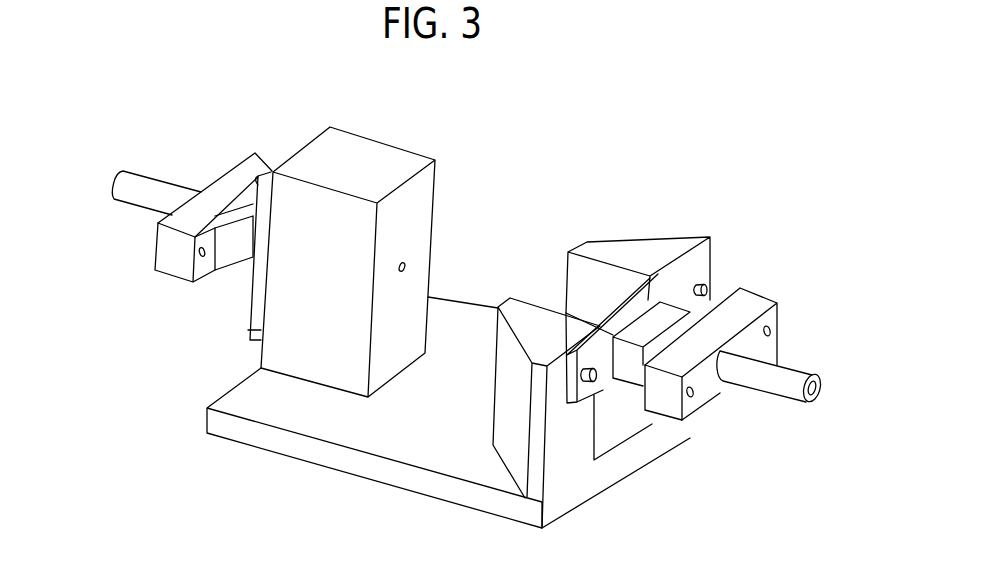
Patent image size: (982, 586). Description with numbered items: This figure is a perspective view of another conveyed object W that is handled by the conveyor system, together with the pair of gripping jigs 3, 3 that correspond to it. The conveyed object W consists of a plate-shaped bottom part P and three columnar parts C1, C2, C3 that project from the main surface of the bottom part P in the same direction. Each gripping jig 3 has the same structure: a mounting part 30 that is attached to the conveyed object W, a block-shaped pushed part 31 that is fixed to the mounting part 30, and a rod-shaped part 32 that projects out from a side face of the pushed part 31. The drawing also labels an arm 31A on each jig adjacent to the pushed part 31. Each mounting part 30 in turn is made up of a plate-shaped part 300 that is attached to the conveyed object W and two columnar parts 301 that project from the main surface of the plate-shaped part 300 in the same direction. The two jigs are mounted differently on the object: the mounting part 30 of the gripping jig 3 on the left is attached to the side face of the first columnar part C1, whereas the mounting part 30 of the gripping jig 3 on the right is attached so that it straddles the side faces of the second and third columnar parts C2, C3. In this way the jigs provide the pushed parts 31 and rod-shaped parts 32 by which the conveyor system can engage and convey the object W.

The gripping jig 3 is at (463, 313).
The mounting part 30 is at (213, 280).
The pushed part 31 is at (160, 286).
The clamp arm 31A is at (234, 176).
The rod-shaped part 32 is at (130, 200).
The plate-shaped part 300 is at (247, 331).
The columnar part 301 is at (240, 268).
The first columnar part C1 is at (397, 160).
The second columnar part C2 is at (546, 300).
The third columnar part C3 is at (622, 250).
The conveyed object W is at (429, 422).
The bottom part P is at (420, 480).